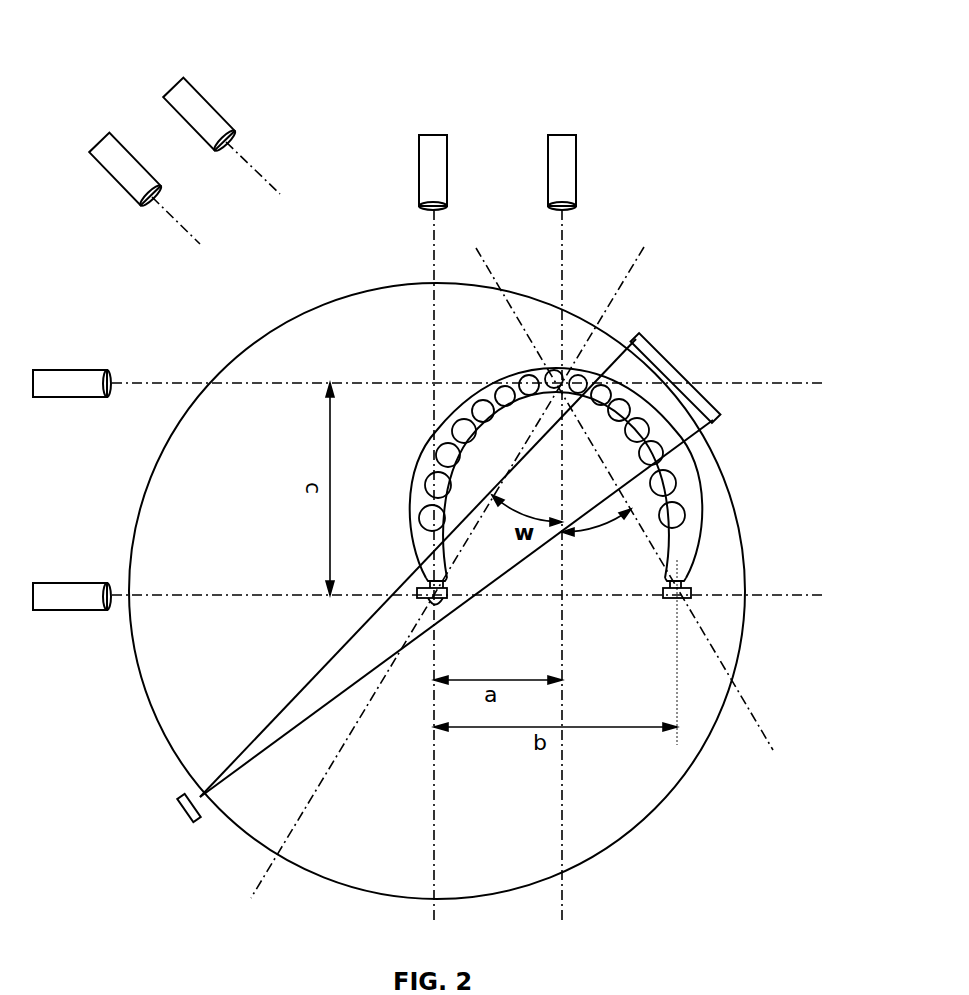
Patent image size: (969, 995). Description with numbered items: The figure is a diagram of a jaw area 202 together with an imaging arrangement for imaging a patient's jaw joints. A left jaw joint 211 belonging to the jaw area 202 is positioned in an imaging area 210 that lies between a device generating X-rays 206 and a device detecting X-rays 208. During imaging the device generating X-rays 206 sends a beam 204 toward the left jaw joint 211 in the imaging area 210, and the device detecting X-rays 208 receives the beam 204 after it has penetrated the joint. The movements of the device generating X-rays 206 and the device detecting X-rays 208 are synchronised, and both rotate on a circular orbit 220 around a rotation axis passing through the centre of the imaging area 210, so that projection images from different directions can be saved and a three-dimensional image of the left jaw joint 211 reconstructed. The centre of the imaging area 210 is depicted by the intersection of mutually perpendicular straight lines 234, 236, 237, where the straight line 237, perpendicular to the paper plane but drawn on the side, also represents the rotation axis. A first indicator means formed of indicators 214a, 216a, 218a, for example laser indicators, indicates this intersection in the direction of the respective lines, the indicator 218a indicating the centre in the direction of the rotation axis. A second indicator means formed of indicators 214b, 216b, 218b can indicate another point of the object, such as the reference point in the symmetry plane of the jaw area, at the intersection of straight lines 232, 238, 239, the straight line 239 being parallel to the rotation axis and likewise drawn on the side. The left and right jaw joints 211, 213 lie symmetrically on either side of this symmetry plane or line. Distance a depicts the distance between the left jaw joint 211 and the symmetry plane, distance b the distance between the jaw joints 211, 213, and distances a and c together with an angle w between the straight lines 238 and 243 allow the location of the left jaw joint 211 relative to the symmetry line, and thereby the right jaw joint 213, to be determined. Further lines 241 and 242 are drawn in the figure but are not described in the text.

The jaw area 202 is at (536, 473).
The beam 204 is at (448, 568).
The device generating X-rays 206 is at (172, 844).
The device detecting X-rays 208 is at (690, 367).
The imaging area 210 is at (454, 625).
The left jaw joint 211 is at (408, 561).
The right jaw joint 213 is at (650, 566).
The indicator 214a is at (72, 563).
The indicator 214b is at (72, 351).
The indicator 216a is at (404, 152).
The indicator 216b is at (533, 152).
The indicator 218a is at (102, 141).
The indicator 218b is at (175, 86).
The circular orbit 220 is at (470, 591).
The straight line 232 is at (467, 354).
The straight line 234 is at (467, 567).
The straight line 236 is at (397, 562).
The straight line 238 is at (597, 562).
The straight line 237 is at (166, 247).
The straight line 239 is at (251, 199).
The first diagonal axis 241 is at (609, 499).
The right post reference line 242 is at (641, 652).
The straight line 243 is at (465, 572).